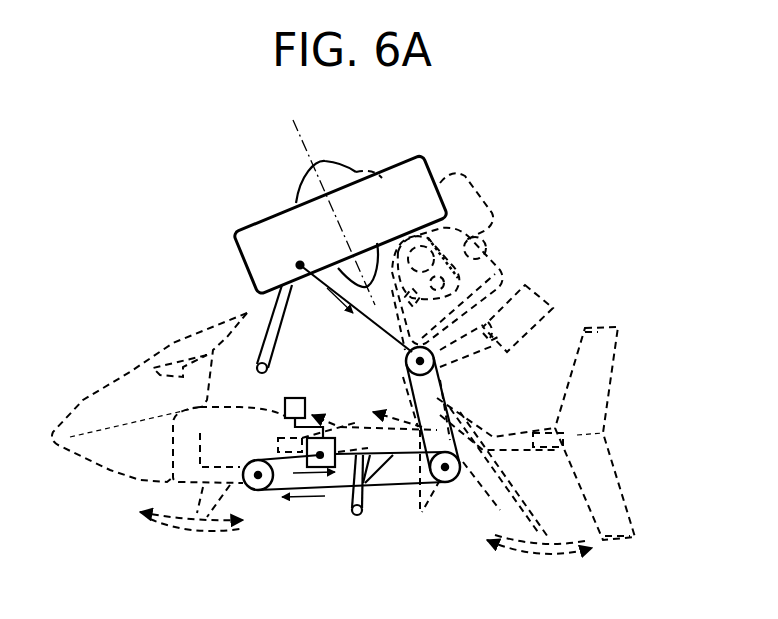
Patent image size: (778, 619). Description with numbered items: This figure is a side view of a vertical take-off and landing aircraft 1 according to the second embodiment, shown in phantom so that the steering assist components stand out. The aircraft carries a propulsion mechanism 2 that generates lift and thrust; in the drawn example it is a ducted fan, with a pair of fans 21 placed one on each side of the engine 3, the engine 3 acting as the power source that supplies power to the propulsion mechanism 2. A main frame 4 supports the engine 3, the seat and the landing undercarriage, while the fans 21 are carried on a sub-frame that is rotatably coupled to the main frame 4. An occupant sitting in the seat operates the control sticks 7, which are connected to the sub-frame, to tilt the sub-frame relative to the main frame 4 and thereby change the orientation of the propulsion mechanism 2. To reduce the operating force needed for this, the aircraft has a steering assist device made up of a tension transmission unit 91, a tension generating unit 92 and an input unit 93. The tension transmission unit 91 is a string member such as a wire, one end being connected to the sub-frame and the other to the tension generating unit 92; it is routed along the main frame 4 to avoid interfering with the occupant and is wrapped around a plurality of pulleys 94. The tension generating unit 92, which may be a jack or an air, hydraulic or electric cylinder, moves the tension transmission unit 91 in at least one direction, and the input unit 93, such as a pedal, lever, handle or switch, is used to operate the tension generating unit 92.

The vertical take-off and landing aircraft 1 is at (125, 276).
The propulsion mechanism 2 is at (322, 212).
The fan 21 is at (247, 248).
The engine 3 is at (480, 202).
The main frame 4 is at (422, 404).
The control stick 7 is at (279, 328).
The tension transmission unit 91 is at (389, 490).
The tension generating unit 92 is at (325, 436).
The input unit 93 is at (296, 398).
The pulley 94 is at (407, 362).